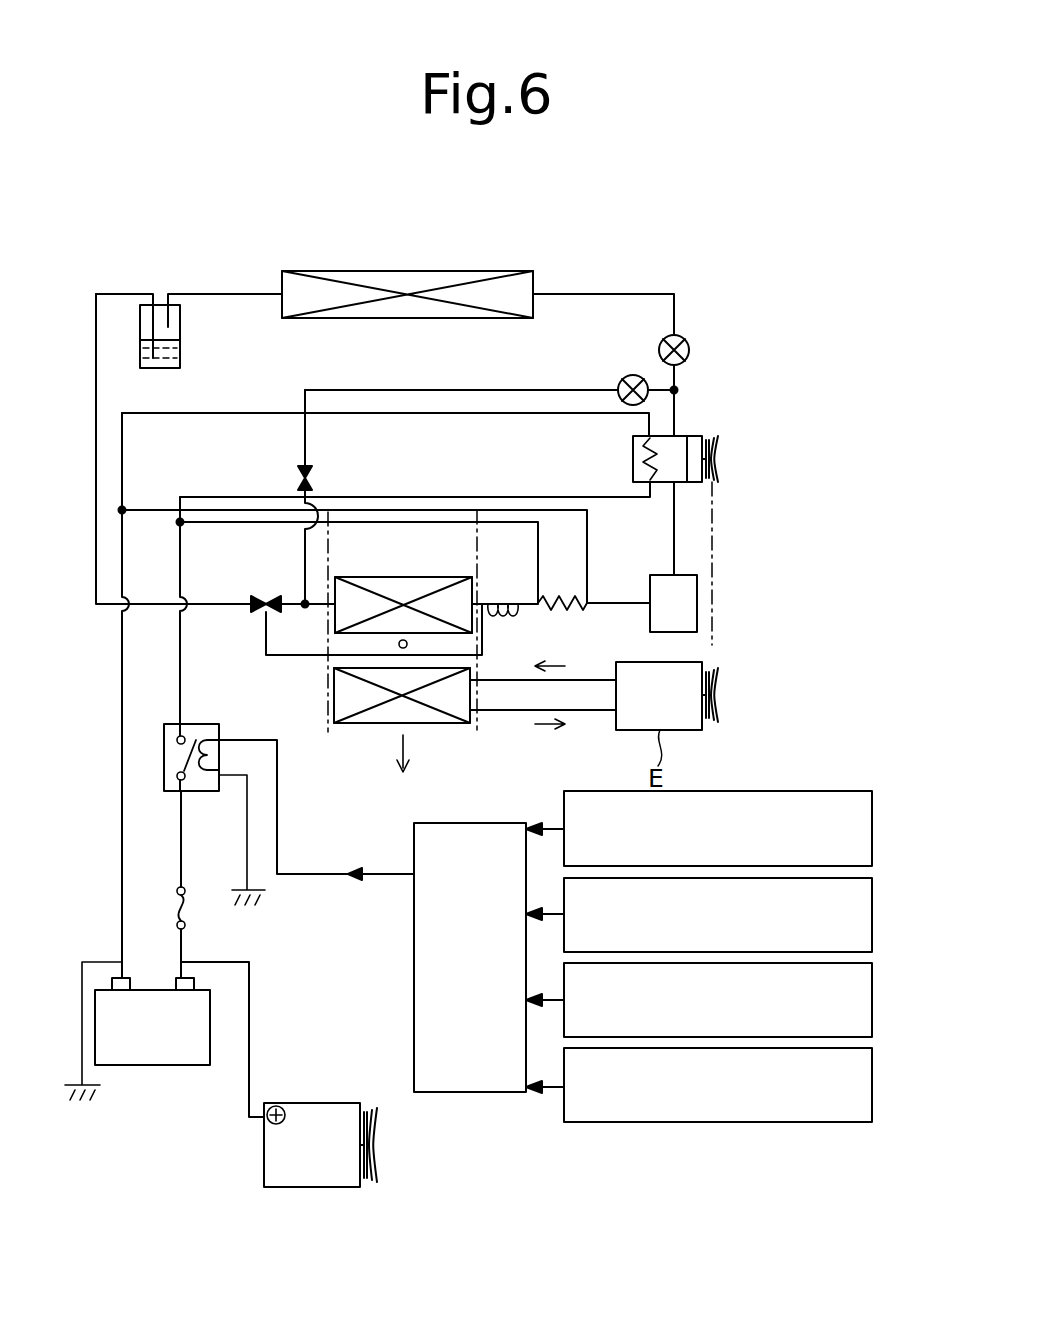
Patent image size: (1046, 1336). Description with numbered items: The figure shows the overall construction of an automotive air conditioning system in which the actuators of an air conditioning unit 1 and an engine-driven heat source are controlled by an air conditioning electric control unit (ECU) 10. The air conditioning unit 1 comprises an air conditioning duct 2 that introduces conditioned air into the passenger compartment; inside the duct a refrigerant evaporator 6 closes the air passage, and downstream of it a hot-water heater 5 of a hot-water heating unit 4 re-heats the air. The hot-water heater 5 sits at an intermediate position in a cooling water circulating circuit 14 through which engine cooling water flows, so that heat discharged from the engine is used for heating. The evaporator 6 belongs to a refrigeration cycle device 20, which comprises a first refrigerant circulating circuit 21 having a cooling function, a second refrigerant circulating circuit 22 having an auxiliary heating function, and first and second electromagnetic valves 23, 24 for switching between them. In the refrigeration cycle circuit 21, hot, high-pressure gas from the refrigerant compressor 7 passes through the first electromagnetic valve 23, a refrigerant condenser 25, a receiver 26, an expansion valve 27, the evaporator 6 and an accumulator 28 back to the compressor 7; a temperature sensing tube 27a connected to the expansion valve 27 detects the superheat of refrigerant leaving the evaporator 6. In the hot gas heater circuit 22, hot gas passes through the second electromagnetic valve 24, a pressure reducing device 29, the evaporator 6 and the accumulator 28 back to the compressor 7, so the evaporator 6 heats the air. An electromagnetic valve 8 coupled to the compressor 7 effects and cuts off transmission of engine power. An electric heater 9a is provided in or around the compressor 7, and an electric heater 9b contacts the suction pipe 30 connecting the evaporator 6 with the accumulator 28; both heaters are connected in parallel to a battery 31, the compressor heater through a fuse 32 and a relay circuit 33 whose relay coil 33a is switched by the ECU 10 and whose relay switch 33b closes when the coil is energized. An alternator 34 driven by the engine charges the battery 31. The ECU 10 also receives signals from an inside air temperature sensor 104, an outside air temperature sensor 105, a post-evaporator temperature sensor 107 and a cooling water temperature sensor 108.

The air conditioning unit 1 is at (158, 226).
The air conditioning duct 2 is at (327, 675).
The hot-water heating unit 4 is at (345, 738).
The hot-water heater 5 is at (440, 724).
The refrigerant evaporator 6 is at (400, 577).
The refrigerant compressor 7 is at (633, 457).
The electromagnetic valve 8 is at (700, 446).
The electric heater 9a is at (652, 419).
The electric heater 9b is at (553, 608).
The air conditioning electric control unit (ECU) 10 is at (493, 823).
The cooling water circulating circuit 14 is at (592, 680).
The refrigeration cycle device 20 is at (598, 286).
The first refrigerant circulating (refrigeration cycle) circuit 21 is at (565, 292).
The second refrigerant circulating (hot gas heater) circuit 22 is at (510, 390).
The first electromagnetic valve 23 is at (660, 348).
The second electromagnetic valve 24 is at (620, 384).
The refrigerant condenser 25 is at (408, 271).
The receiver (vapor-liquid separator) 26 is at (180, 352).
The expansion valve (first pressure reducing device) 27 is at (263, 598).
The temperature sensing tube 27a is at (516, 600).
The accumulator (vapor-liquid separator) 28 is at (654, 575).
The pressure reducing device (second pressure reducing device) 29 is at (298, 470).
The suction pipe 30 is at (624, 602).
The battery 31 is at (155, 1065).
The fuse 32 is at (175, 905).
The relay circuit 33 is at (169, 724).
The relay coil 33a is at (206, 785).
The relay switch 33b is at (176, 762).
The alternator 34 is at (321, 1103).
The inside air temperature sensor 104 is at (872, 997).
The outside air temperature sensor 105 is at (872, 834).
The post-evaporator temperature sensor 107 is at (398, 644).
The cooling water temperature sensor 108 is at (872, 1084).